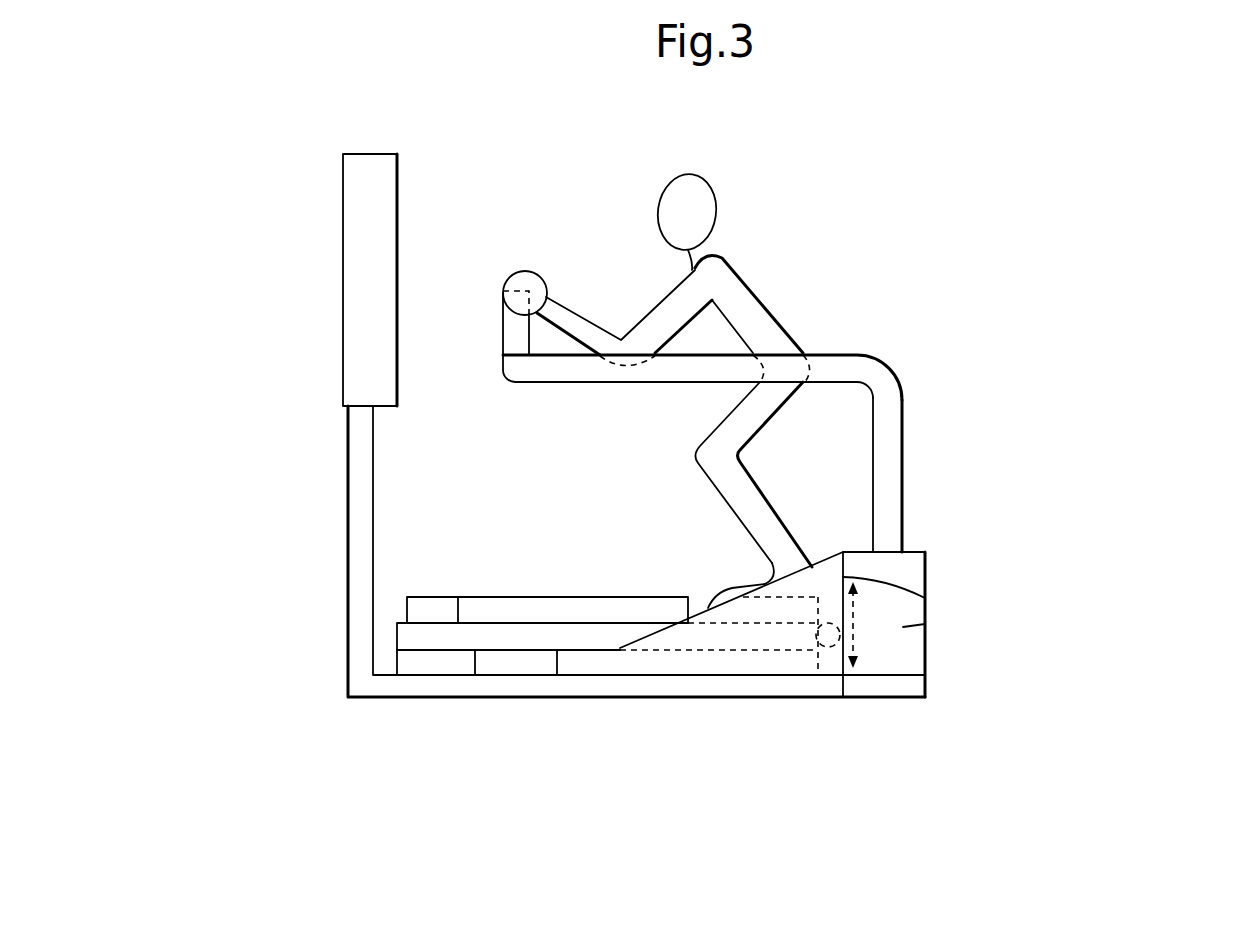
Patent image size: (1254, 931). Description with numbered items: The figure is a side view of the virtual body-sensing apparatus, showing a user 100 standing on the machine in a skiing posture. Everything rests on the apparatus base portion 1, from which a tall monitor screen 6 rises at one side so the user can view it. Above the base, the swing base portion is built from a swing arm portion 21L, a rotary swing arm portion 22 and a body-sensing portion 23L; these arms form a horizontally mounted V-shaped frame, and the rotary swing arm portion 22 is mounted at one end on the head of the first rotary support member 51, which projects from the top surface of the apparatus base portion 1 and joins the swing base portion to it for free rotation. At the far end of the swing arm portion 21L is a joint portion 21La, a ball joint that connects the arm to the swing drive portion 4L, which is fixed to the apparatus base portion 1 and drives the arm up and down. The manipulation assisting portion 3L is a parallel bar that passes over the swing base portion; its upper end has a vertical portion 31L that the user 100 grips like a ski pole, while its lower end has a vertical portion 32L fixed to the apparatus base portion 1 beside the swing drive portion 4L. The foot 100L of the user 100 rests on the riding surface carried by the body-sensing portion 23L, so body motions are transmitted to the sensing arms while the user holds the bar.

The apparatus base portion 1 is at (598, 687).
The monitor screen 6 is at (365, 200).
The rotary swing arm portion 22 is at (481, 606).
The swing arm portion 21L is at (410, 637).
The first rotary support member 51 is at (418, 662).
The body-sensing portion 23L is at (754, 604).
The joint portion 21La is at (828, 648).
The swing drive portion 4L is at (918, 588).
The manipulation assisting portion 3L is at (817, 364).
The vertical portion 31L is at (510, 335).
The vertical portion 32L is at (887, 430).
The user 100 is at (707, 389).
The foot 100L is at (784, 537).